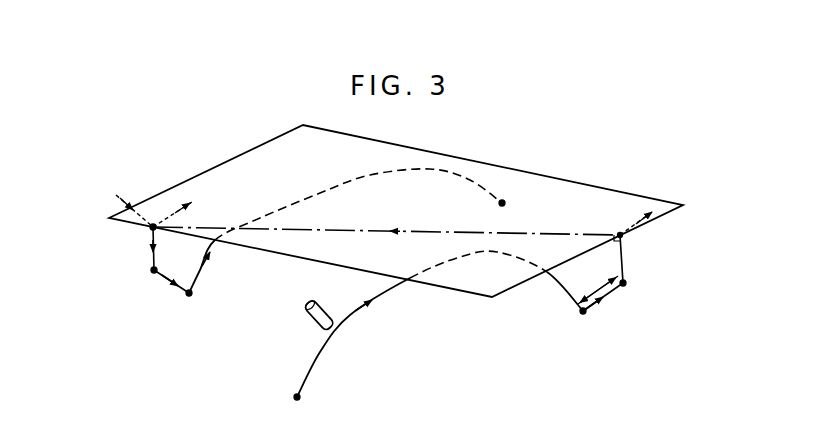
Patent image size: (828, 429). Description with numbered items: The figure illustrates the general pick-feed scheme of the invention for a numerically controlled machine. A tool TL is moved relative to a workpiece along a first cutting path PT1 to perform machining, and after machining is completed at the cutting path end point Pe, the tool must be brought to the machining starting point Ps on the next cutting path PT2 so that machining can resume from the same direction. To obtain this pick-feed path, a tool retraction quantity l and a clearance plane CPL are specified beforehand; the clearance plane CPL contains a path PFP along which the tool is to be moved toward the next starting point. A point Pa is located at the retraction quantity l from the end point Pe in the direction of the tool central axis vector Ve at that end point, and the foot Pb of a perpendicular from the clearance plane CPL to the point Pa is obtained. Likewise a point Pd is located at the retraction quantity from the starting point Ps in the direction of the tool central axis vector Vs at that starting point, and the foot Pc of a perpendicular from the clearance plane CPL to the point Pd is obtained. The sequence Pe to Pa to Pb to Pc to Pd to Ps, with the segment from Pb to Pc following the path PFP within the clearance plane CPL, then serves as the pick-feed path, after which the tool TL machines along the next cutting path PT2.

The clearance plane CPL is at (545, 182).
The path PFP is at (538, 233).
The cutting path PT1 is at (350, 314).
The next cutting path PT2 is at (204, 262).
The tool TL is at (305, 323).
The foot of perpendicular Pc is at (151, 224).
The point Pd is at (107, 277).
The machining starting point Ps is at (223, 304).
The point Pa is at (648, 295).
The foot of perpendicular Pb is at (665, 258).
The cutting path end point Pe is at (619, 326).
The tool central axis vector Vs is at (117, 197).
The tool central axis vector Ve is at (194, 197).
The tool retraction quantity l is at (598, 290).